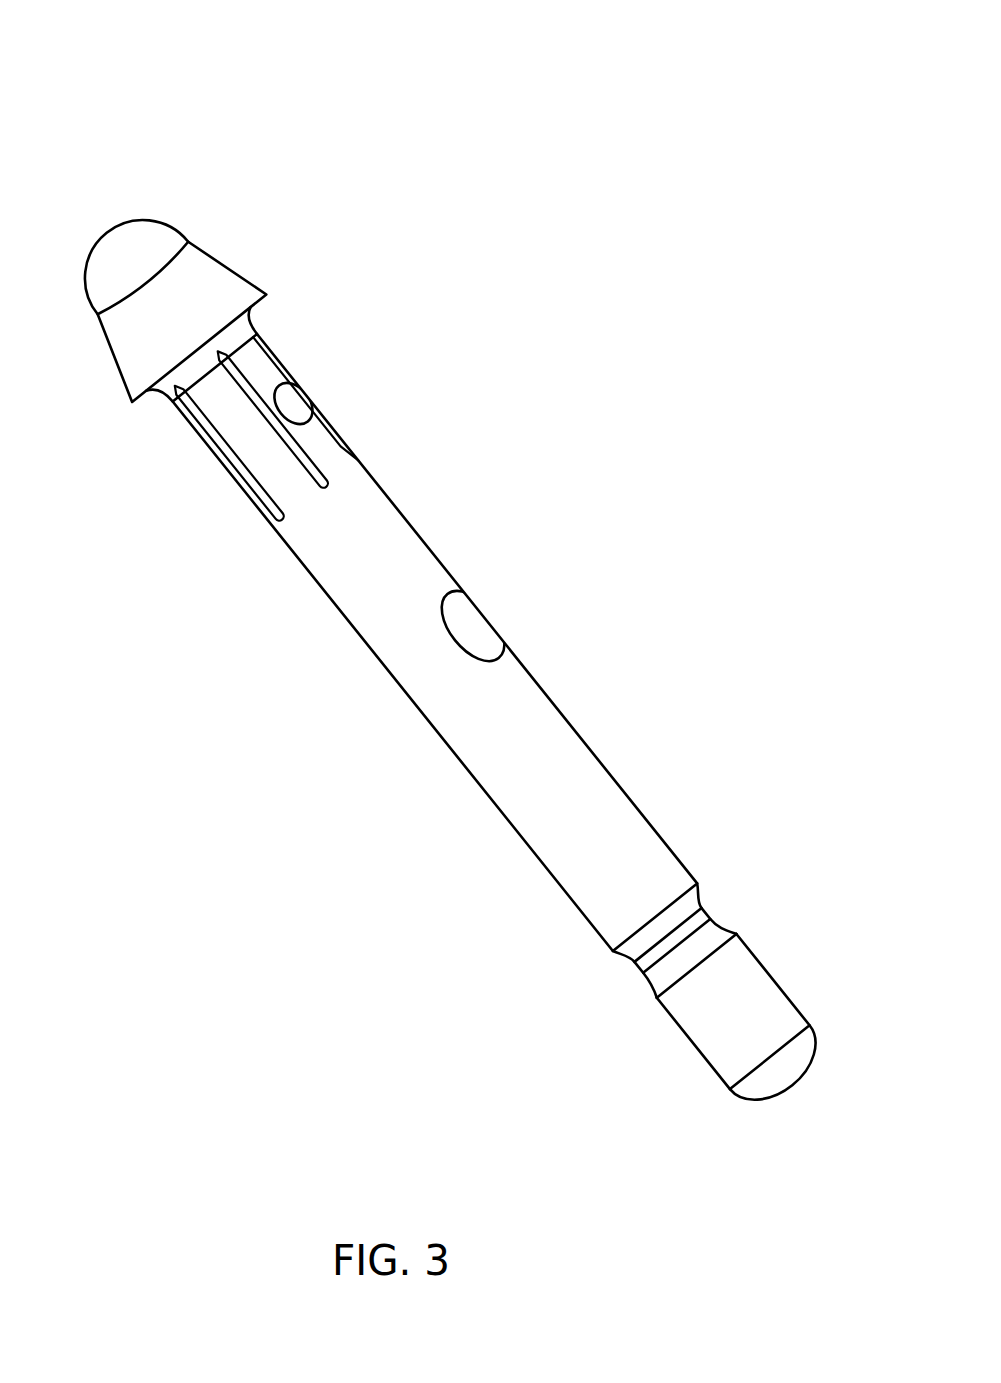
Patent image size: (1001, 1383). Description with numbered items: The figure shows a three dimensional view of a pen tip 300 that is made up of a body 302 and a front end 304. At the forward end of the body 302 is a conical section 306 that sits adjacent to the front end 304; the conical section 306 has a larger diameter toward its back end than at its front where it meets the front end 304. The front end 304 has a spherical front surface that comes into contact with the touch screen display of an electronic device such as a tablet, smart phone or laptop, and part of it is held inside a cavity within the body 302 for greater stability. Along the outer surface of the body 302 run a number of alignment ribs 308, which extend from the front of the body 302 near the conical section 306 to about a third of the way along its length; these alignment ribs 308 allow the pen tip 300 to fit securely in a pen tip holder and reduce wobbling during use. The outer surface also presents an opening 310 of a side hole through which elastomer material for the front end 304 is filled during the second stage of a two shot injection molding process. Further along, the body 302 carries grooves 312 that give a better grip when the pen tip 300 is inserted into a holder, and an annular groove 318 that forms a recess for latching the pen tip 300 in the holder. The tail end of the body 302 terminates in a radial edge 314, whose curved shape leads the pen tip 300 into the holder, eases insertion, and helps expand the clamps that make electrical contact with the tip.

The pen tip 300 is at (105, 66).
The body 302 is at (527, 700).
The front end 304 is at (145, 220).
The conical section 306 is at (220, 262).
The alignment ribs 308 is at (228, 453).
The opening 310 is at (296, 397).
The grooves 312 is at (465, 638).
The radial edge 314 is at (738, 1105).
The annular groove 318 is at (642, 957).